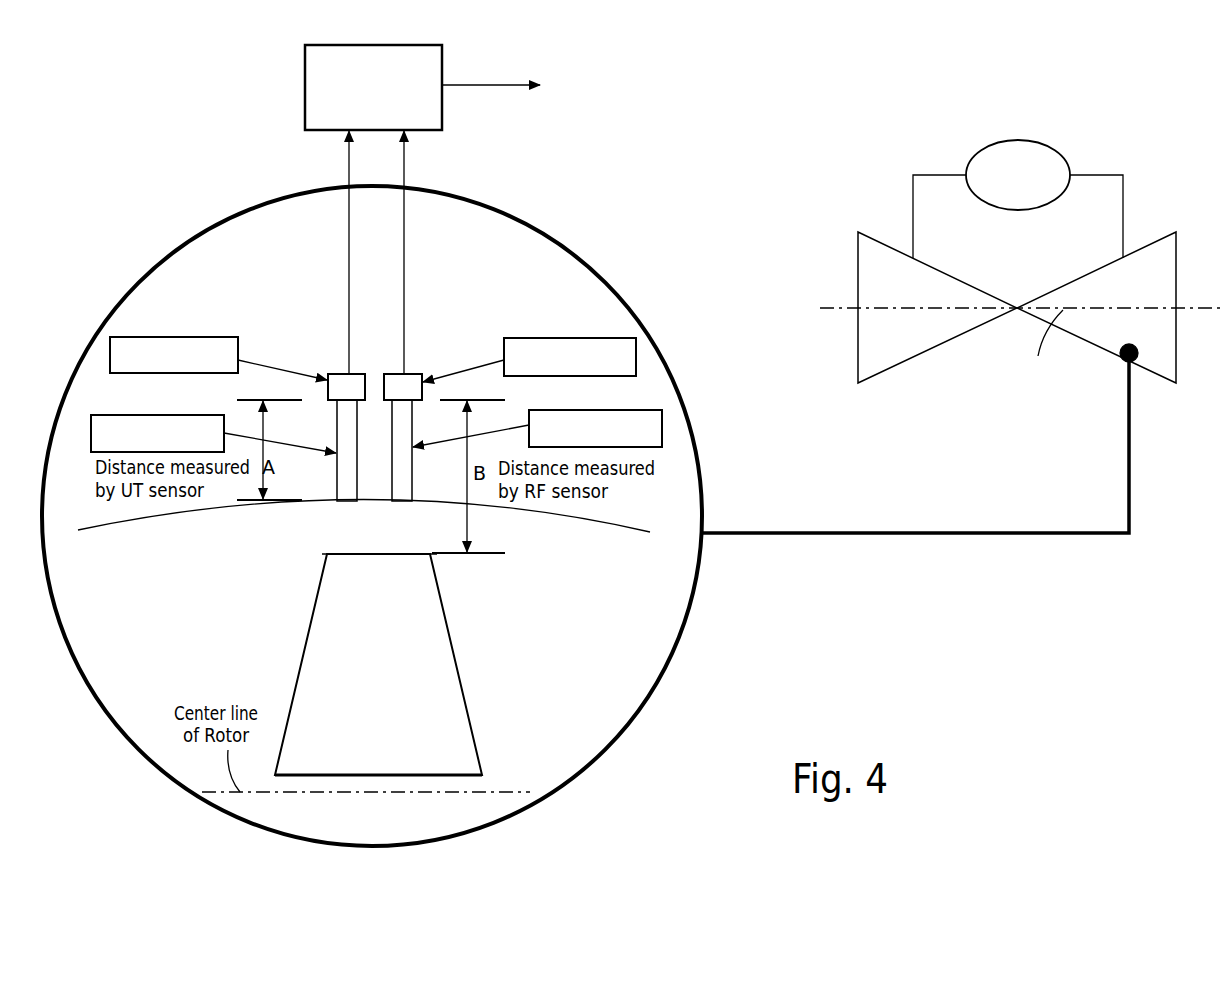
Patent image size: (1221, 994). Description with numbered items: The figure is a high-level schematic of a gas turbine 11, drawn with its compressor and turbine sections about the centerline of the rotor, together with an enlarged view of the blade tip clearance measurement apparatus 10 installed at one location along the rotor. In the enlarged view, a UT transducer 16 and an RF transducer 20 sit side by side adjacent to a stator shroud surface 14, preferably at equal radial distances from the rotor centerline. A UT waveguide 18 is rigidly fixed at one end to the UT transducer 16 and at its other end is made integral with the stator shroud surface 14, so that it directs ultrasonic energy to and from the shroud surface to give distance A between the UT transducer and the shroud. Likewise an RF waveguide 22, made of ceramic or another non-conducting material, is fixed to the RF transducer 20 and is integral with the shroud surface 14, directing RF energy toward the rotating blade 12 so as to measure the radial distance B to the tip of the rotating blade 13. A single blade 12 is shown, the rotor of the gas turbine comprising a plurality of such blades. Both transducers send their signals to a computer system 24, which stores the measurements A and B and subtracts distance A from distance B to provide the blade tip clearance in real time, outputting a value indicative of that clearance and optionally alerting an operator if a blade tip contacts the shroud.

The distance measurement apparatus 10 is at (559, 180).
The gas turbine 11 is at (901, 115).
The rotating blade 12 is at (455, 636).
The tip of the rotating blade 13 is at (325, 553).
The stator shroud surface 14 is at (593, 551).
The UT transducer 16 is at (213, 337).
The UT waveguide 18 is at (131, 415).
The RF transducer 20 is at (544, 338).
The RF waveguide 22 is at (615, 410).
The computer system 24 is at (305, 92).